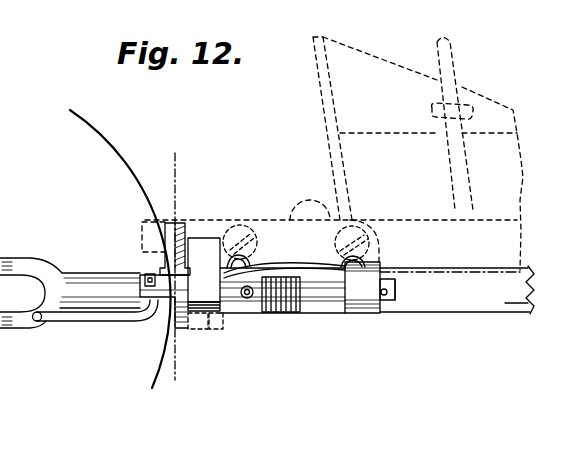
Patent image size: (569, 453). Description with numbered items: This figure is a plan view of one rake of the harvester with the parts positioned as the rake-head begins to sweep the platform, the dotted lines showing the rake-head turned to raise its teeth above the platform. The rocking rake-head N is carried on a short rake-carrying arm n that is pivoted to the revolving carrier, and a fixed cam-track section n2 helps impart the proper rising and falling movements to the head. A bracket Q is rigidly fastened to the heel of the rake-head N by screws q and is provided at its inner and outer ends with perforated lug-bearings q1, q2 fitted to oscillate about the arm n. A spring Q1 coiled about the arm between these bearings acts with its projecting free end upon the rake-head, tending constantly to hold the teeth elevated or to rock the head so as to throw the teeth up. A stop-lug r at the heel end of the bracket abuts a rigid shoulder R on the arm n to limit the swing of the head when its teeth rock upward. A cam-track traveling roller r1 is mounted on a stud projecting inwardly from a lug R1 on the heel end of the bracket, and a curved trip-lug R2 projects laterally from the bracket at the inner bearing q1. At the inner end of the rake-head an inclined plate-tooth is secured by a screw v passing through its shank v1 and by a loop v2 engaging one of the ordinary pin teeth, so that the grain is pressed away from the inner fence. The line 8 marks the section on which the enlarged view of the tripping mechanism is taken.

The section line 8 is at (174, 268).
The rake-carrying arm n is at (267, 293).
The cam-track section n2 is at (96, 327).
The rake-head N is at (427, 290).
The stop-lug r is at (162, 284).
The cam-track traveling roller r1 is at (150, 233).
The shoulder or rib R is at (176, 286).
The lug R1 is at (182, 230).
The curved arm or trip-lug R2 is at (201, 334).
The screws q is at (232, 265).
The inner lug-bearing q1 is at (212, 312).
The outer lug-bearing q2 is at (370, 287).
The bracket Q is at (308, 267).
The spring Q1 is at (260, 315).
The screw v is at (310, 210).
The shank v1 is at (340, 181).
The loop v2 is at (444, 112).